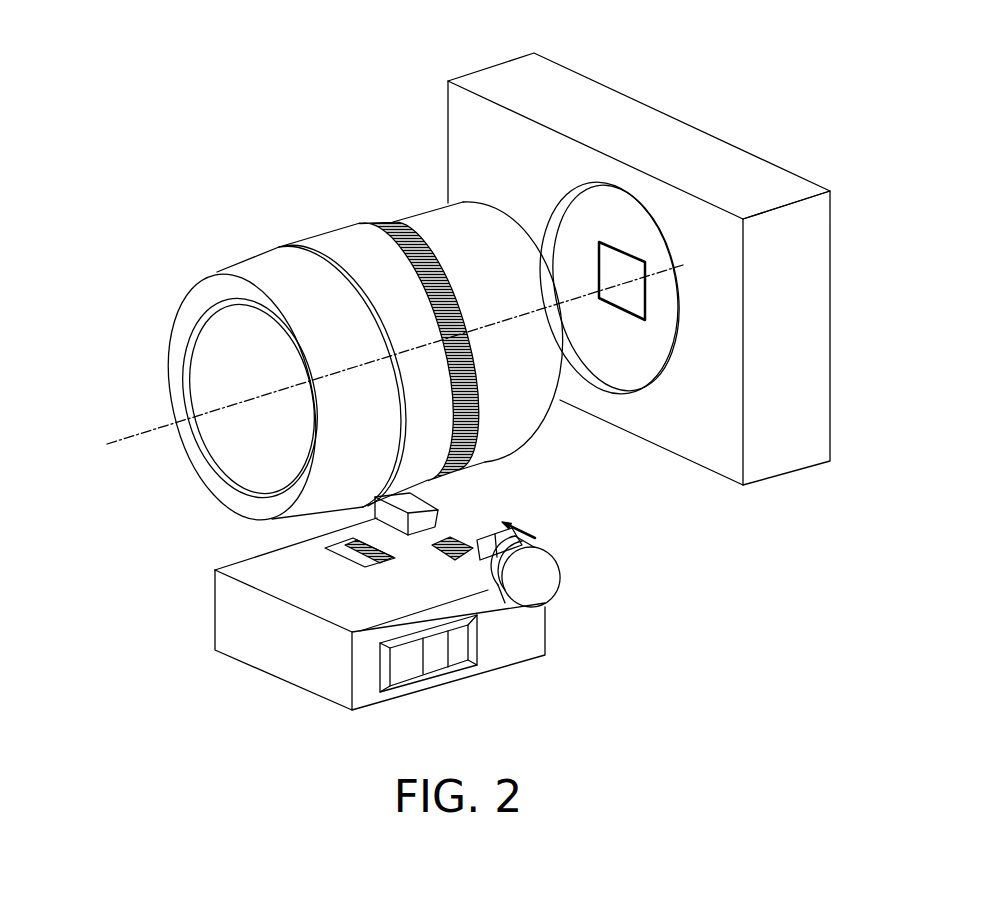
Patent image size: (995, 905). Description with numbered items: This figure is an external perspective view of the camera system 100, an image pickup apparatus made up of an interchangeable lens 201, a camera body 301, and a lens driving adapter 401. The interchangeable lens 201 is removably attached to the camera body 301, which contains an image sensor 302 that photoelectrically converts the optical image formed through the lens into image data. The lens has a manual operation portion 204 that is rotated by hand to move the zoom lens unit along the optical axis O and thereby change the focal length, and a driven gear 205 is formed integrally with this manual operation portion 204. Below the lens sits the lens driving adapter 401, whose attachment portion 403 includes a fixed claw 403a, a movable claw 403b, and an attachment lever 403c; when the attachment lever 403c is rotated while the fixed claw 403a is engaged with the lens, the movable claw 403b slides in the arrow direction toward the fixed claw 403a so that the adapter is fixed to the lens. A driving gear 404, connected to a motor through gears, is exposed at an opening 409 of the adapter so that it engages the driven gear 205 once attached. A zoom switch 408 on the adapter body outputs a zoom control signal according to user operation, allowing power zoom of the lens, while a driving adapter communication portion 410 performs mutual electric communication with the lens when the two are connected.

The camera system 100 is at (354, 68).
The optical axis O is at (157, 428).
The interchangeable lens 201 is at (238, 263).
The manual operation portion 204 is at (312, 238).
The driven gear 205 is at (373, 222).
The camera body 301 is at (687, 120).
The image sensor 302 is at (627, 252).
The lens driving adapter 401 is at (265, 673).
The attachment portion 403 is at (705, 495).
The fixed claw 403a is at (407, 493).
The movable claw 403b is at (528, 531).
The attachment lever 403c is at (553, 592).
The driving gear 404 is at (348, 555).
The zoom switch 408 is at (480, 676).
The opening 409 is at (340, 552).
The driving adapter communication portion 410 is at (447, 553).